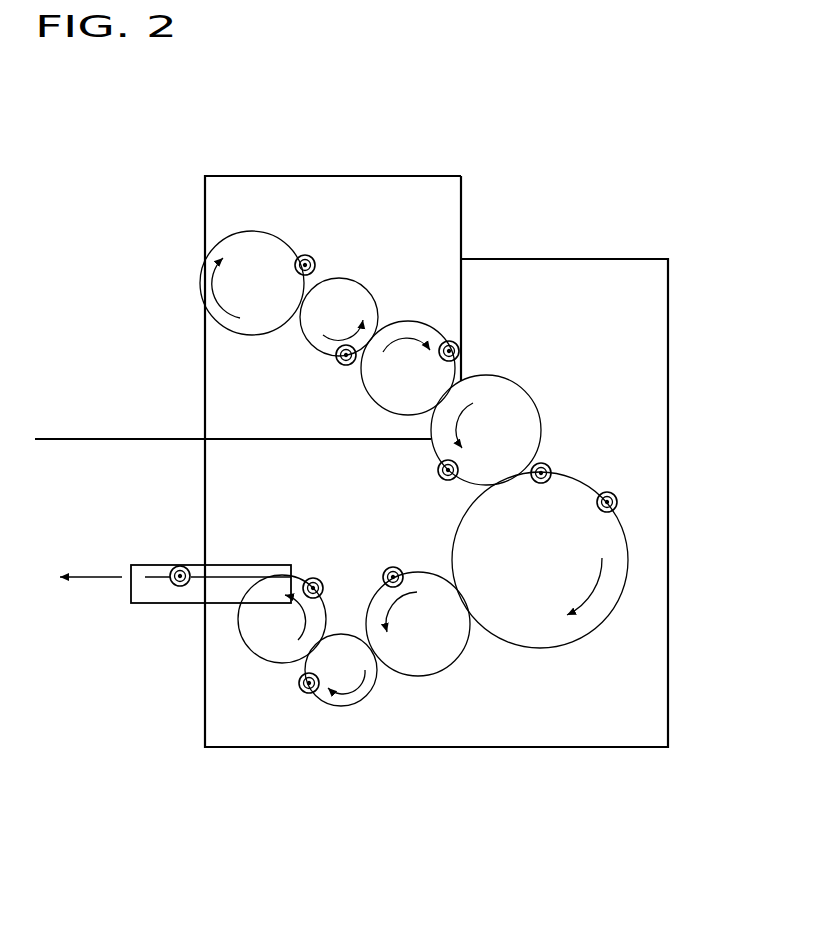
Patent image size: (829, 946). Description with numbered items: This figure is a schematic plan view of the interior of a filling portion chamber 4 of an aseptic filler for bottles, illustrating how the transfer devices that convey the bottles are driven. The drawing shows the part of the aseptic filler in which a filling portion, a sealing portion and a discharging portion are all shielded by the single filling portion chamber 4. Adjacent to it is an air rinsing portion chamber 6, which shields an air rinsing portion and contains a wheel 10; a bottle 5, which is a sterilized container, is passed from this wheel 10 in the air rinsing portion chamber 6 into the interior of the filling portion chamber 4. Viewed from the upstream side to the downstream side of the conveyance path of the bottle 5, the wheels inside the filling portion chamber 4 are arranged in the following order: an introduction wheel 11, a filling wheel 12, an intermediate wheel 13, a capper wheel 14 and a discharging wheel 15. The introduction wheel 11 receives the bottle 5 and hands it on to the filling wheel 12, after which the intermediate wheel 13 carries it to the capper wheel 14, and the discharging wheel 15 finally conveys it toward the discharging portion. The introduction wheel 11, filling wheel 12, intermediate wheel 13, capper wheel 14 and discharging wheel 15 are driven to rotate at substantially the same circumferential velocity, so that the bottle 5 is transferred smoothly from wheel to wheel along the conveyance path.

The filling portion chamber 4 is at (622, 259).
The bottle 5 is at (312, 260).
The air rinsing portion chamber 6 is at (302, 176).
The wheel 10 is at (406, 322).
The introduction wheel 11 is at (542, 403).
The filling wheel 12 is at (627, 540).
The intermediate wheel 13 is at (402, 677).
The capper wheel 14 is at (318, 692).
The discharging wheel 15 is at (252, 657).